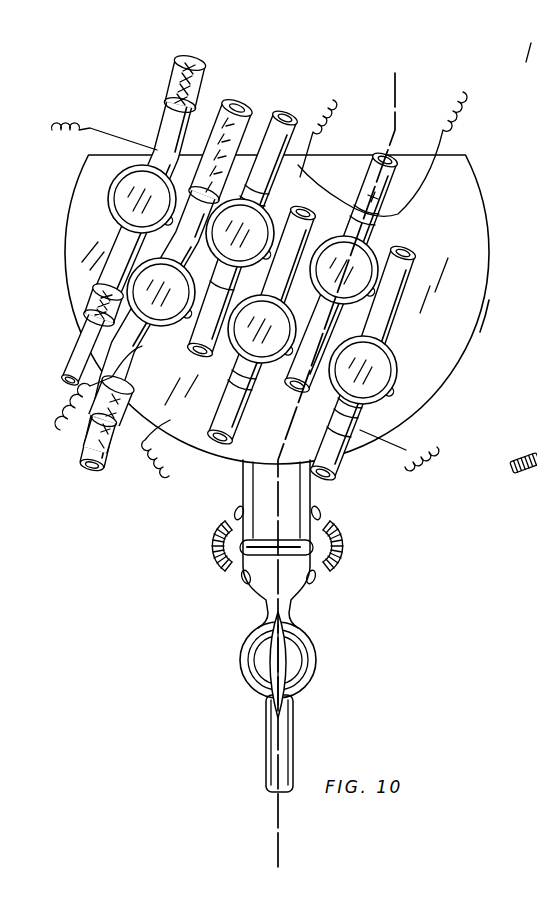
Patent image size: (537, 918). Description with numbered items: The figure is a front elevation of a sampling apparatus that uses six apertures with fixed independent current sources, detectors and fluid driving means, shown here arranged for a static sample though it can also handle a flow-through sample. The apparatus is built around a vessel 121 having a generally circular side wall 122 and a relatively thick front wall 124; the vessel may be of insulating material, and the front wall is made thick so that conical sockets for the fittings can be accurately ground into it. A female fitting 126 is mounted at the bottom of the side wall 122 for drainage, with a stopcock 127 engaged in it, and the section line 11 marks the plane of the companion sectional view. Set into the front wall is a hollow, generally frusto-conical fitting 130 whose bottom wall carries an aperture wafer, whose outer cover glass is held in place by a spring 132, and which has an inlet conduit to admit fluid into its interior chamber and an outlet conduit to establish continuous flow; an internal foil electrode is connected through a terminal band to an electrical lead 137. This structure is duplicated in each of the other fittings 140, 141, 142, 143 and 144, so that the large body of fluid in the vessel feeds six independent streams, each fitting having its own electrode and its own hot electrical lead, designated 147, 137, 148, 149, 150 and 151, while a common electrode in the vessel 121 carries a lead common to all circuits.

The section line 11- 11 is at (315, 838).
The vessel 121 is at (345, 153).
The side wall 122 is at (489, 327).
The front wall 124 is at (466, 232).
The female fitting 126 is at (295, 490).
The stopcock 127 is at (322, 660).
The frusto-conical fitting 130 is at (362, 254).
The spring 132 is at (324, 244).
The electrical lead 137 is at (456, 112).
The fitting 140 is at (398, 378).
The fitting 141 is at (265, 366).
The fitting 142 is at (258, 212).
The fitting 143 is at (162, 312).
The fitting 144 is at (126, 207).
The electrical lead 147 is at (431, 447).
The electrical lead 148 is at (167, 479).
The electrical lead 149 is at (324, 104).
The electrical lead 150 is at (60, 428).
The electrical lead 151 is at (98, 126).